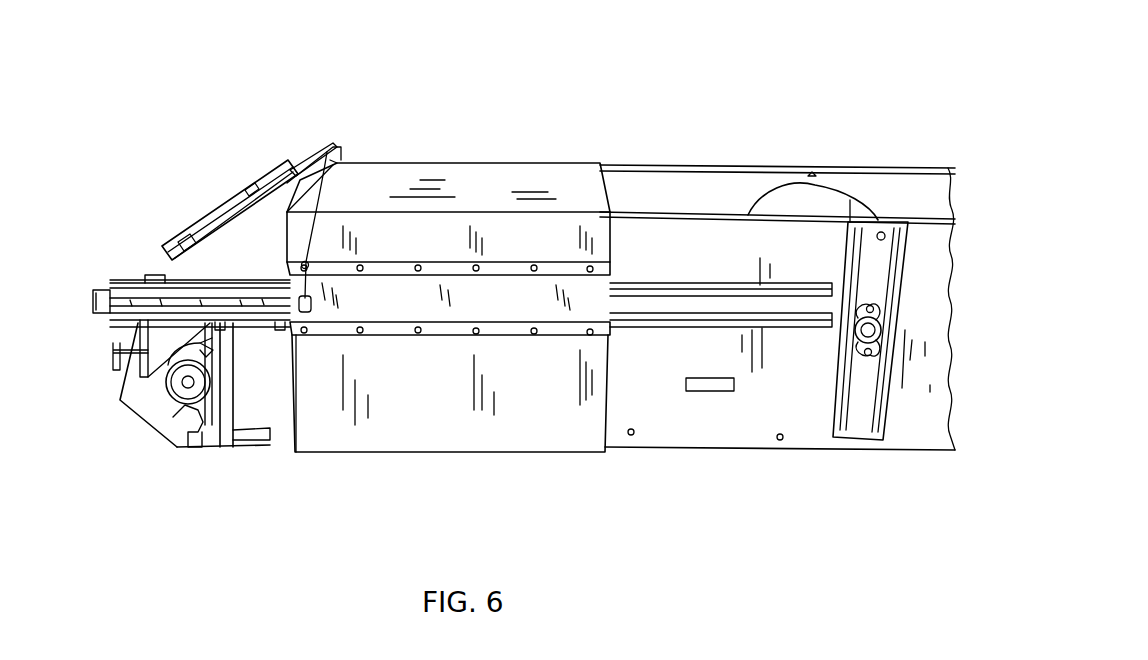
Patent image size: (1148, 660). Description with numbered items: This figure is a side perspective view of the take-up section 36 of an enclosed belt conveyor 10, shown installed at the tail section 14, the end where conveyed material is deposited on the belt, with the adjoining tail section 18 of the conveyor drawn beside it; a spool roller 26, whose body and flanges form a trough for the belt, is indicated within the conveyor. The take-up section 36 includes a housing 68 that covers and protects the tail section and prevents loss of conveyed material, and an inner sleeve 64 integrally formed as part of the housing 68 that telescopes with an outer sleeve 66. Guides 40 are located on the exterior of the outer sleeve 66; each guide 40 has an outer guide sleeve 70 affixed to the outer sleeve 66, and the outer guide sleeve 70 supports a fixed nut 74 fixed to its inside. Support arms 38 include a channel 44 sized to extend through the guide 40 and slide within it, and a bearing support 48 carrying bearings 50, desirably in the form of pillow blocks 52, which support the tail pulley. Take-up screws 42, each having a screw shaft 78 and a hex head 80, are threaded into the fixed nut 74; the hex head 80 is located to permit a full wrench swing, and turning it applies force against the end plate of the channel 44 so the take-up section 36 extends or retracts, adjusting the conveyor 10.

The enclosed belt conveyor 10 is at (545, 148).
The tail section 14 is at (438, 167).
The tail section 18 is at (685, 167).
The spool roller 26 is at (808, 202).
The take-up section 36 is at (382, 453).
The support arms 38 is at (147, 283).
The guides 40 is at (460, 310).
The take-up screws 42 is at (195, 300).
The channel 44 is at (131, 283).
The bearing support 48 is at (238, 424).
The bearings 50 is at (186, 384).
The pillow blocks 52 is at (186, 455).
The inner sleeve 64 is at (268, 410).
The outer sleeve 66 is at (505, 420).
The housing 68 is at (357, 162).
The outer guide sleeve 70 is at (573, 313).
The fixed nut 74 is at (333, 153).
The screw shaft 78 is at (137, 305).
The hex head 80 is at (99, 306).